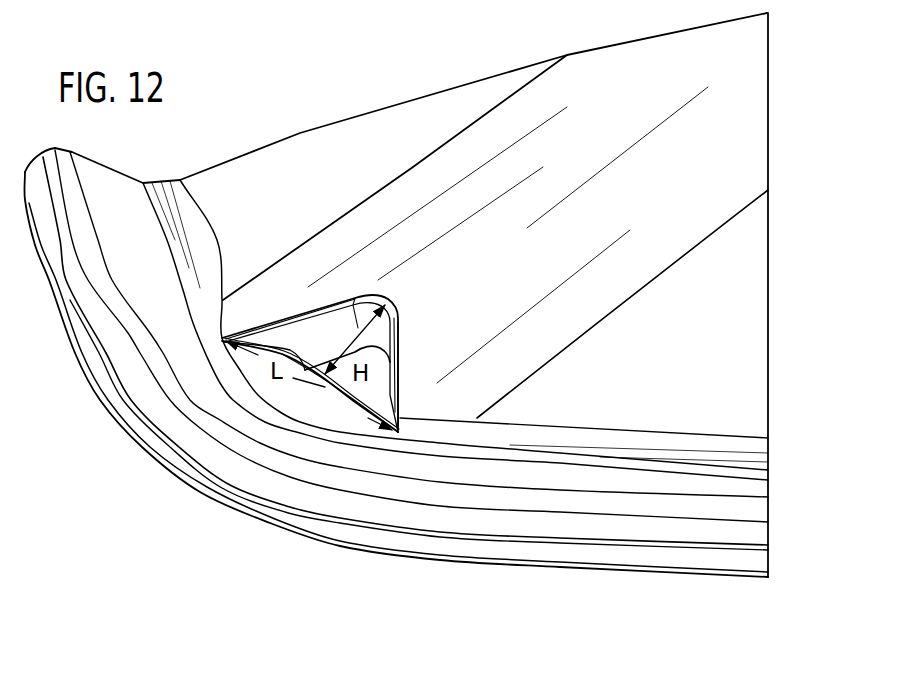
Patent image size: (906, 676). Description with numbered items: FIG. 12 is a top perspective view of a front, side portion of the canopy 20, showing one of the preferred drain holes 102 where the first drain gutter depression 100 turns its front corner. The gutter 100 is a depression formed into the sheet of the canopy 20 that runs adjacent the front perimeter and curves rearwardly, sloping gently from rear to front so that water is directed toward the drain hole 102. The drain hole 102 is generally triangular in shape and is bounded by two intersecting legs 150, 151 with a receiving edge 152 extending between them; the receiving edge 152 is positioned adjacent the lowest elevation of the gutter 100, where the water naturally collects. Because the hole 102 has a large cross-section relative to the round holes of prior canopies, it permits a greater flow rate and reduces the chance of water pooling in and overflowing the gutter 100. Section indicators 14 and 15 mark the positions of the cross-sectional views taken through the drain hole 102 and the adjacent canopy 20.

The canopy 20 is at (618, 222).
The first drain gutter depression 100 is at (616, 447).
The drain hole 102 is at (403, 347).
The leg 150 is at (292, 319).
The leg 151 is at (402, 397).
The receiving edge 152 is at (347, 402).
The section line 14- 14 is at (467, 235).
The section line 15- 15 is at (768, 211).